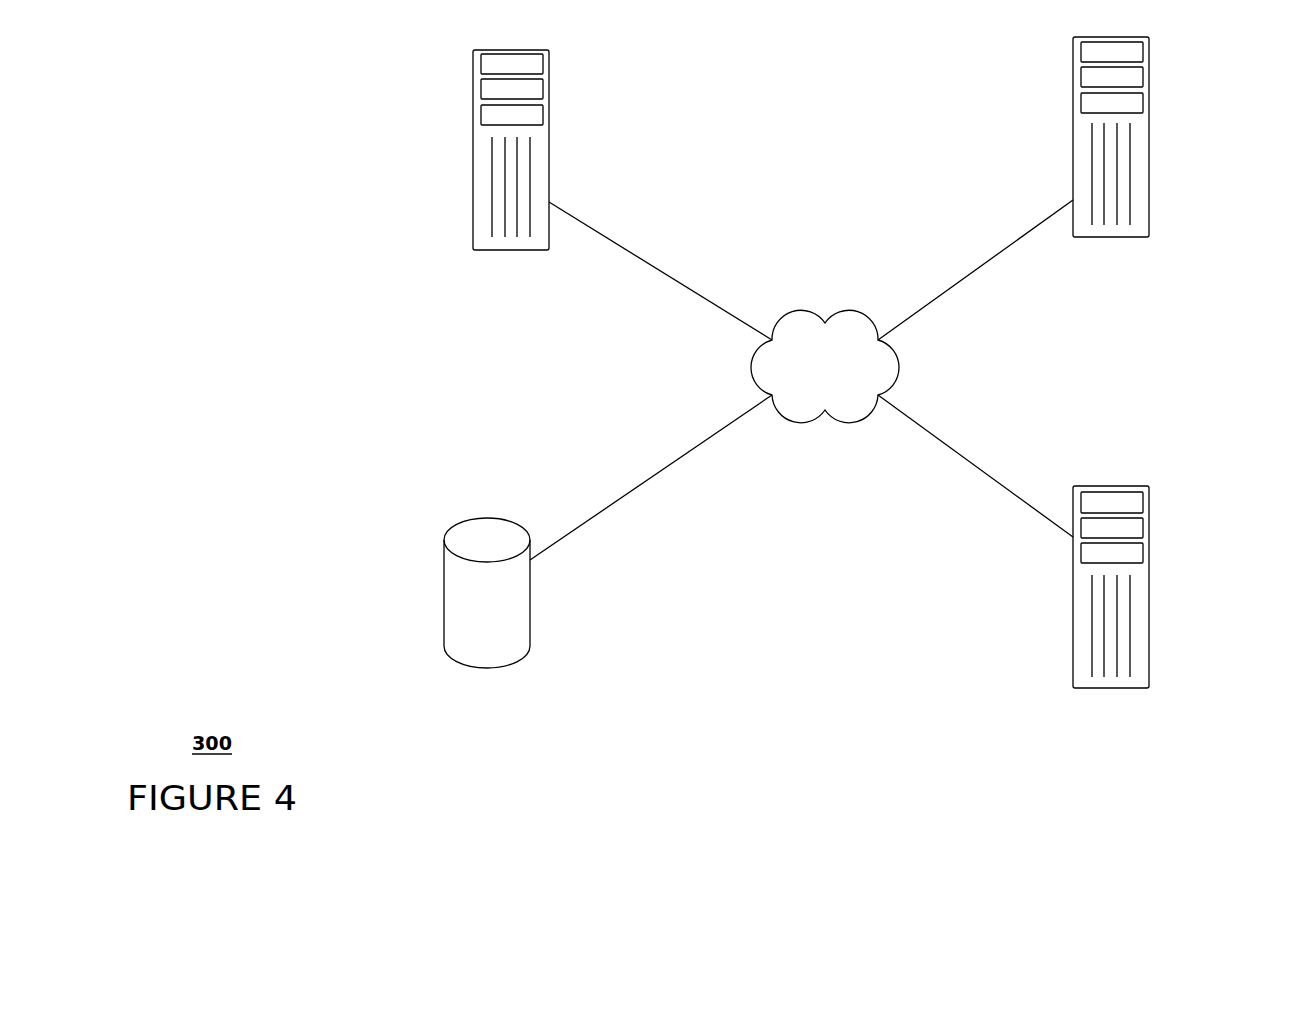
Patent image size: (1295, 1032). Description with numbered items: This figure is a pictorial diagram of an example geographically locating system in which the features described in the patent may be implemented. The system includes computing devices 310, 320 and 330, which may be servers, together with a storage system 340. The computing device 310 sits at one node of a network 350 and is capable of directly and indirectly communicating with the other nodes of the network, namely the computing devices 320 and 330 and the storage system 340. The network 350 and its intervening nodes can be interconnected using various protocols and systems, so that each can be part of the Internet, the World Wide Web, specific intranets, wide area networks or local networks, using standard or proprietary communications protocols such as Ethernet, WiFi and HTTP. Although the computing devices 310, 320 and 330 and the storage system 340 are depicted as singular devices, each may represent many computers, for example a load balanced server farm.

The computing device 310 is at (549, 94).
The computing device 320 is at (1149, 80).
The computing device 330 is at (1149, 538).
The storage system 340 is at (530, 613).
The network 350 is at (825, 366).